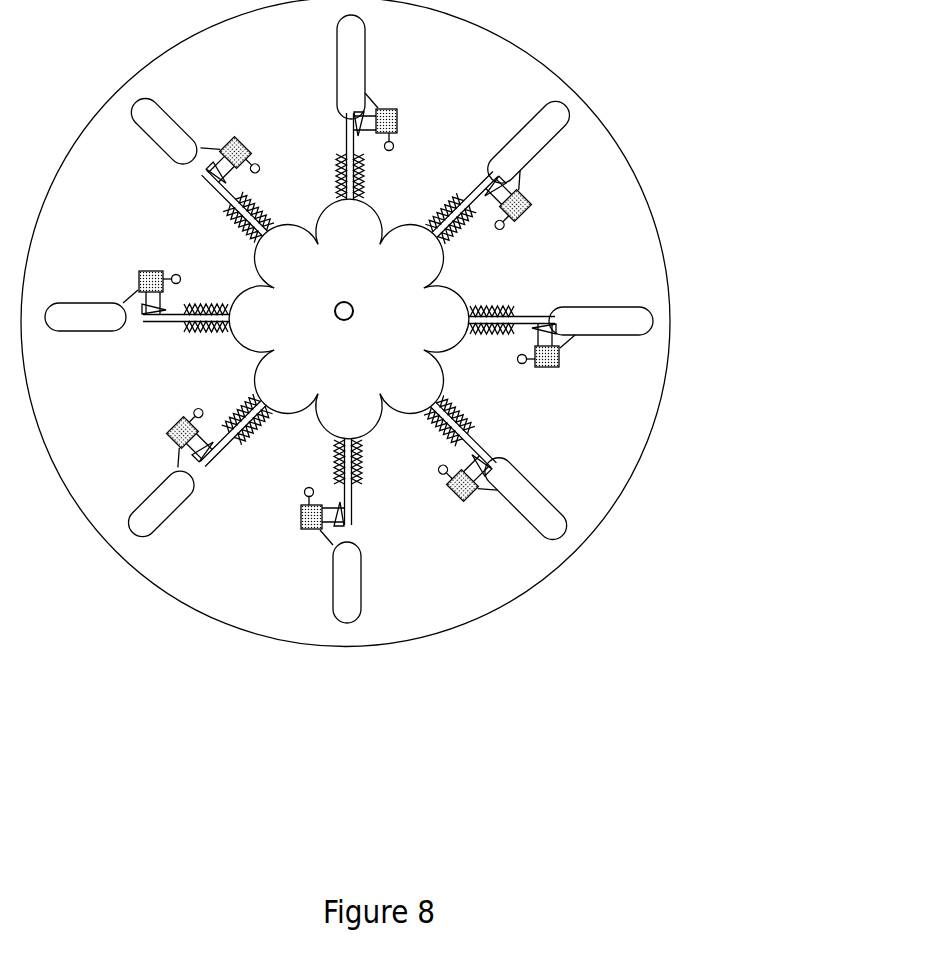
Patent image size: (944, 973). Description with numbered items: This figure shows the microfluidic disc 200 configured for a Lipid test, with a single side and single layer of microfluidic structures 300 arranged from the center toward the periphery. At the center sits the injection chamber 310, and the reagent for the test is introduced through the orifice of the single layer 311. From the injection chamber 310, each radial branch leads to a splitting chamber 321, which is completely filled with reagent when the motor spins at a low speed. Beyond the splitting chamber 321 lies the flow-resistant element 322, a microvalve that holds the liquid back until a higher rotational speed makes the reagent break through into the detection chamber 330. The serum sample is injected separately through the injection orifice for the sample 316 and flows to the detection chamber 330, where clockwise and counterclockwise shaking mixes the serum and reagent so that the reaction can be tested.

The microfluidic disc 200 is at (588, 43).
The layer of microfluidic structures 300 is at (600, 155).
The injection chamber 310 is at (352, 253).
The orifice of the single layer 311 is at (350, 305).
The splitting chamber 321 is at (408, 388).
The flow-resistant element 322 is at (468, 428).
The detection chamber 330 is at (535, 518).
The injection orifice for the sample 316 is at (511, 534).